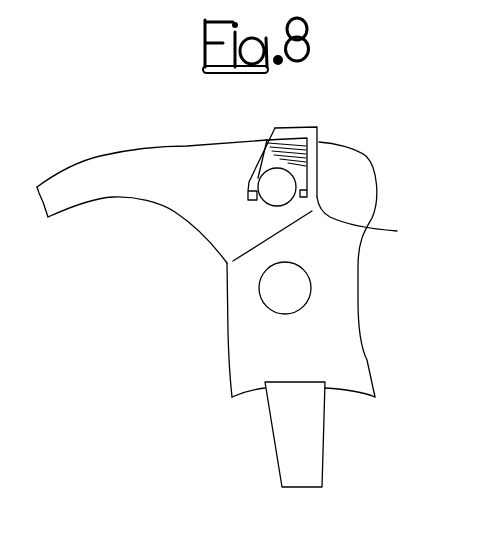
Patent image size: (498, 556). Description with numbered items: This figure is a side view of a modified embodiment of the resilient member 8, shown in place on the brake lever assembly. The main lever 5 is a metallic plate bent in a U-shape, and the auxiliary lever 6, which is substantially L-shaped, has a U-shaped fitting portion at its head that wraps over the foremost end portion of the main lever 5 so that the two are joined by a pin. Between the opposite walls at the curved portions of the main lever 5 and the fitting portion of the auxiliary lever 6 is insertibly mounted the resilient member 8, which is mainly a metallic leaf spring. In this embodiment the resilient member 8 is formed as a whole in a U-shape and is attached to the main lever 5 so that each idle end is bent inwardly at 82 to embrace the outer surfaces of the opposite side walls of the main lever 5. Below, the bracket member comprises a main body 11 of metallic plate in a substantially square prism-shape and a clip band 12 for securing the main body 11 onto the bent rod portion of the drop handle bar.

The main lever 5 is at (203, 148).
The auxiliary lever 6 is at (312, 127).
The resilient member 8 is at (307, 157).
The inwardly bent idle end 82 is at (331, 229).
The main body 11 is at (342, 295).
The clip band 12 is at (313, 428).